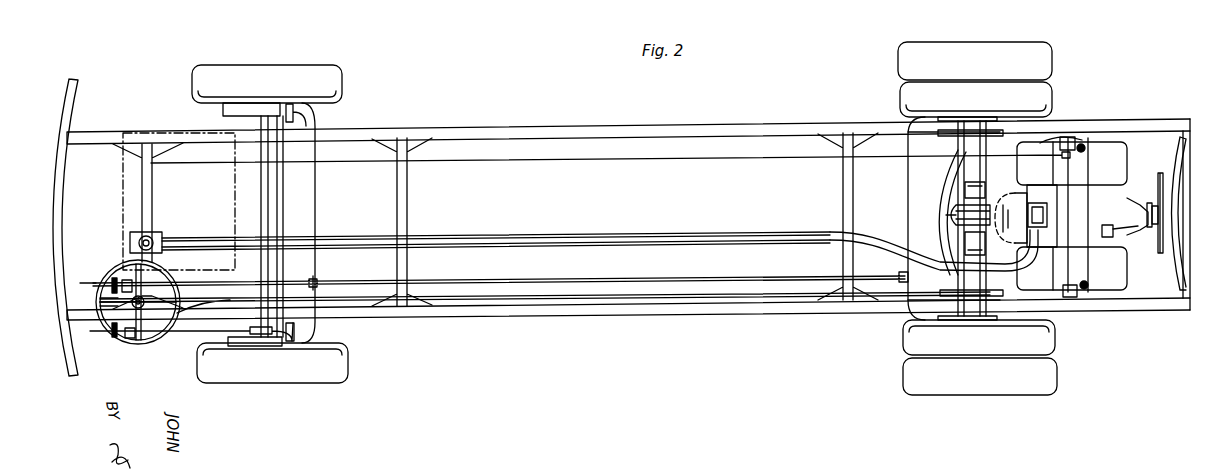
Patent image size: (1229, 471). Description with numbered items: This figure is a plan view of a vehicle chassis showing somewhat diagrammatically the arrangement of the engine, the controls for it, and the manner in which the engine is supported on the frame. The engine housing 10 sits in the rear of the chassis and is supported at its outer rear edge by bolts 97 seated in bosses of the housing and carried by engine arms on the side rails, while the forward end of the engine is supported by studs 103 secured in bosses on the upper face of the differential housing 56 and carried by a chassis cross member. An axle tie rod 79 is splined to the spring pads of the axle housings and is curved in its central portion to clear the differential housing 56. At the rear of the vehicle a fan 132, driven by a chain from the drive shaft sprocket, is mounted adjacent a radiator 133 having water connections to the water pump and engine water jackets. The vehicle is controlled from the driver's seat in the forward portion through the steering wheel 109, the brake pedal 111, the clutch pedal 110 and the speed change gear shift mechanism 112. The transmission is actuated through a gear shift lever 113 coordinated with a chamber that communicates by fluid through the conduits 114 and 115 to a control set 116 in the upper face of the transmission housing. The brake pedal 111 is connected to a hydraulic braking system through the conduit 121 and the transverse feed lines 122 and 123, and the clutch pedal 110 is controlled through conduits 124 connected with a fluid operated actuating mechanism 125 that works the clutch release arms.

The housing 10 is at (1085, 165).
The differential housing 56 is at (962, 207).
The axle tie rod 79 is at (955, 172).
The bolts 97 is at (1083, 139).
The studs 103 is at (998, 200).
The steering wheel 109 is at (142, 344).
The clutch pedal 110 is at (115, 340).
The brake pedal 111 is at (105, 282).
The speed change gear shift mechanism 112 is at (163, 236).
The gear shift lever 113 is at (143, 237).
The conduit 114 is at (500, 234).
The conduit 115 is at (555, 242).
The control set 116 is at (1048, 217).
The conduit 121 is at (338, 282).
The transverse feed line 122 is at (316, 206).
The transverse feed line 123 is at (907, 258).
The conduits 124 is at (635, 298).
The fluid operated actuating mechanism 125 is at (1118, 231).
The fan 132 is at (1160, 180).
The radiator 133 is at (1181, 154).